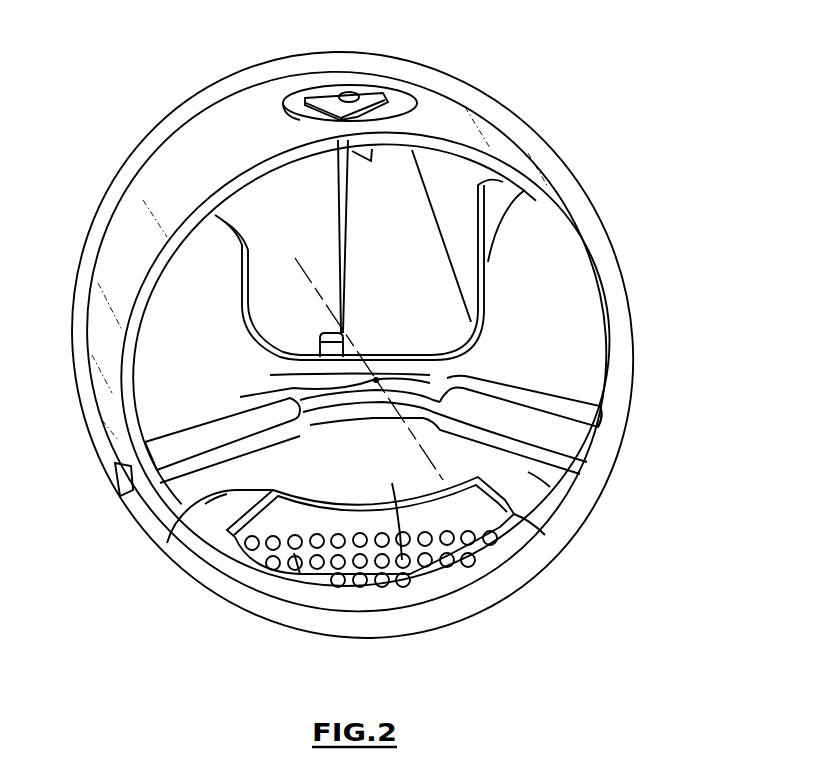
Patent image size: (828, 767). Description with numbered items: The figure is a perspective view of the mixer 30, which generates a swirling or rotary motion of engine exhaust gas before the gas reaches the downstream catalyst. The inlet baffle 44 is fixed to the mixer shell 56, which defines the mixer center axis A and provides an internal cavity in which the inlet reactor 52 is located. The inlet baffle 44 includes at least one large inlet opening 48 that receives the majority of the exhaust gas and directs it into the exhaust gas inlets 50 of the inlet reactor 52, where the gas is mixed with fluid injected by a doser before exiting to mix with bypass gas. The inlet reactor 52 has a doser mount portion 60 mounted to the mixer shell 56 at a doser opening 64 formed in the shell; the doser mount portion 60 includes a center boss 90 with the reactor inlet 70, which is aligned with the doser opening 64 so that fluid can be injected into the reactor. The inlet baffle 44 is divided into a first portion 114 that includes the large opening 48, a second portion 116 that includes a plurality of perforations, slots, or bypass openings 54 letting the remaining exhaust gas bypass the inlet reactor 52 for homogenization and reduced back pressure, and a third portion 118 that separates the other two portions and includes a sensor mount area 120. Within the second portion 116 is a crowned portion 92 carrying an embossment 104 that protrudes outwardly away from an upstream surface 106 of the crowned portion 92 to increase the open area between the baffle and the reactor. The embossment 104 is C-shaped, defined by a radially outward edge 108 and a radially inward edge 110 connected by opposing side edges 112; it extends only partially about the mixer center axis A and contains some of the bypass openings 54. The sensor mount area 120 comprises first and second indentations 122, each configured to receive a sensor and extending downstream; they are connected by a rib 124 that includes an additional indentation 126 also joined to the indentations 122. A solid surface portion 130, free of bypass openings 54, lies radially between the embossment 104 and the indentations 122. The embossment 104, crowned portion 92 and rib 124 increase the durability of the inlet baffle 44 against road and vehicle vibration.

The mixer 30 is at (703, 265).
The inlet baffle 44 is at (587, 382).
The large inlet opening 48 is at (484, 270).
The exhaust gas inlets 50 is at (447, 259).
The inlet reactor 52 is at (373, 222).
The bypass openings 54 is at (358, 587).
The mixer shell 56 is at (110, 278).
The doser mount portion 60 is at (298, 110).
The doser opening 64 is at (283, 113).
The reactor inlet 70 is at (350, 88).
The center boss 90 is at (370, 102).
The crowned portion 92 is at (550, 487).
The embossment 104 is at (335, 505).
The upstream surface 106 is at (207, 508).
The radially outward edge 108 is at (472, 535).
The radially inward edge 110 is at (402, 560).
The opposing side edges 112 is at (205, 504).
The first portion 114 is at (553, 288).
The second portion 116 is at (294, 553).
The third portion 118 is at (165, 430).
The sensor mount area 120 is at (310, 426).
The first and second indentations 122 is at (115, 470).
The rib 124 is at (433, 373).
The additional indentation 126 is at (463, 393).
The solid surface portion 130 is at (445, 567).
The mixer center axis A is at (319, 287).